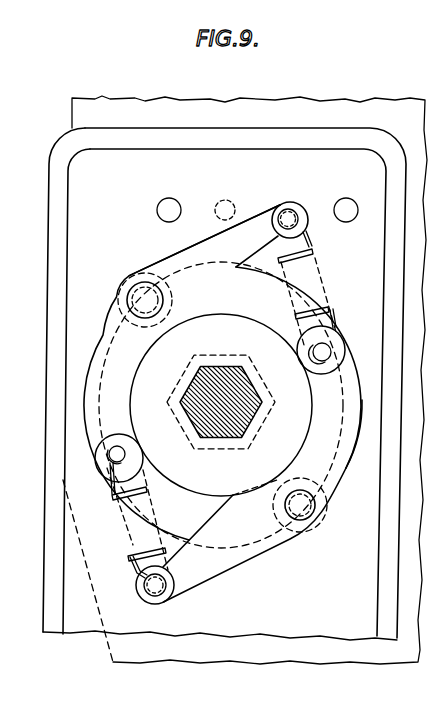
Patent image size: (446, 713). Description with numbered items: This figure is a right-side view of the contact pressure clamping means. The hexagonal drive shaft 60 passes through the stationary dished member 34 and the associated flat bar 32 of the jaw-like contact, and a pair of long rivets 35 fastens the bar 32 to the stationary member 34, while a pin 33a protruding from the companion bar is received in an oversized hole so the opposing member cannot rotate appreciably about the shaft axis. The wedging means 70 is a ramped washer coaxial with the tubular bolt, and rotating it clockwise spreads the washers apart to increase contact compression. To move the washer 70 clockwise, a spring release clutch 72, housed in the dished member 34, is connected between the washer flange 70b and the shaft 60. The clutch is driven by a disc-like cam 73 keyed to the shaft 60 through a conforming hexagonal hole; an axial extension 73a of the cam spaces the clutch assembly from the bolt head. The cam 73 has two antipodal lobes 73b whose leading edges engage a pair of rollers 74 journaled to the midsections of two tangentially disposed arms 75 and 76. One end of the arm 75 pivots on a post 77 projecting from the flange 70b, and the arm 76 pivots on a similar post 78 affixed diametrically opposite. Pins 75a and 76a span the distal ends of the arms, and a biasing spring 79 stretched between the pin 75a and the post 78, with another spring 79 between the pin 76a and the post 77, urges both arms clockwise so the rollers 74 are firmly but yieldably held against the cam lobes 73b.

The flat bar 32 is at (366, 112).
The dished member 34 is at (68, 146).
The long rivets 35 is at (163, 202).
The pin 33a is at (226, 200).
The wedging means 70 is at (80, 380).
The washer flange 70b is at (349, 460).
The spring release clutch 72 is at (330, 261).
The disc-like cam 73 is at (188, 493).
The axial extension 73a is at (229, 354).
The cam lobes 73b is at (119, 345).
The rollers 74 is at (173, 300).
The arm 75 is at (182, 262).
The pin 75a is at (288, 208).
The arm 76 is at (242, 571).
The pin 76a is at (174, 596).
The post 77 is at (111, 457).
The post 78 is at (334, 347).
The biasing spring 79 is at (294, 313).
The drive shaft 60 is at (188, 430).